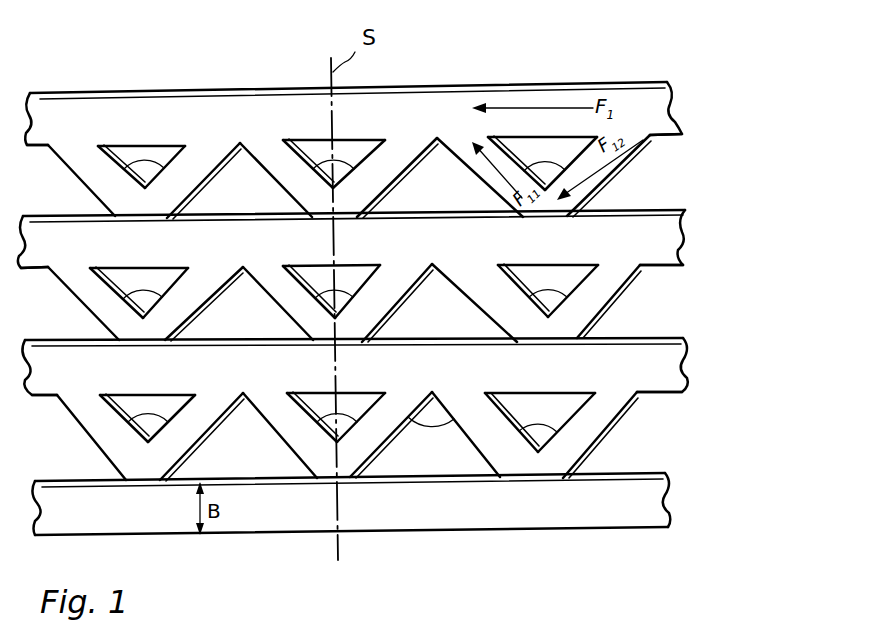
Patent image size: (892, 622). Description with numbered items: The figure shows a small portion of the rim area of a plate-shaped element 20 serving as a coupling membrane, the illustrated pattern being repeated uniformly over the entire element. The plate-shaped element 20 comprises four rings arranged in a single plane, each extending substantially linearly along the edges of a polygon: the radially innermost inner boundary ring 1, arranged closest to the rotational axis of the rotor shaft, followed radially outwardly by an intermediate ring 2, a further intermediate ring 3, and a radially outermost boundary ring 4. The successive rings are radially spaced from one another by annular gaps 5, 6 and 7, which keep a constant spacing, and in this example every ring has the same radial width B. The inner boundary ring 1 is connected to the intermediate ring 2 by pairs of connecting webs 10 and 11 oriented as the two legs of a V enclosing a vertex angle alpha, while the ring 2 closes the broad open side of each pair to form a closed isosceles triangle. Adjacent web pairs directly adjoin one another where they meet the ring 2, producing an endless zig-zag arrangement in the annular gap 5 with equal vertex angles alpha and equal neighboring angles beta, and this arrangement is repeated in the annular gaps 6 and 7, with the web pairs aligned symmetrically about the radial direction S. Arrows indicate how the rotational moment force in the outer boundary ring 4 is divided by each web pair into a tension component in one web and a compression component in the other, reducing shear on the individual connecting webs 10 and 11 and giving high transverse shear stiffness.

The inner boundary ring 1 is at (660, 501).
The intermediate ring 2 is at (660, 366).
The further intermediate ring 3 is at (660, 246).
The radially outermost boundary ring 4 is at (657, 122).
The annular gap 5 is at (661, 442).
The annular gap 6 is at (670, 297).
The annular gap 7 is at (680, 173).
The connecting web 10 is at (608, 443).
The connecting web 11 is at (493, 182).
The plate-shaped element 20 is at (490, 53).